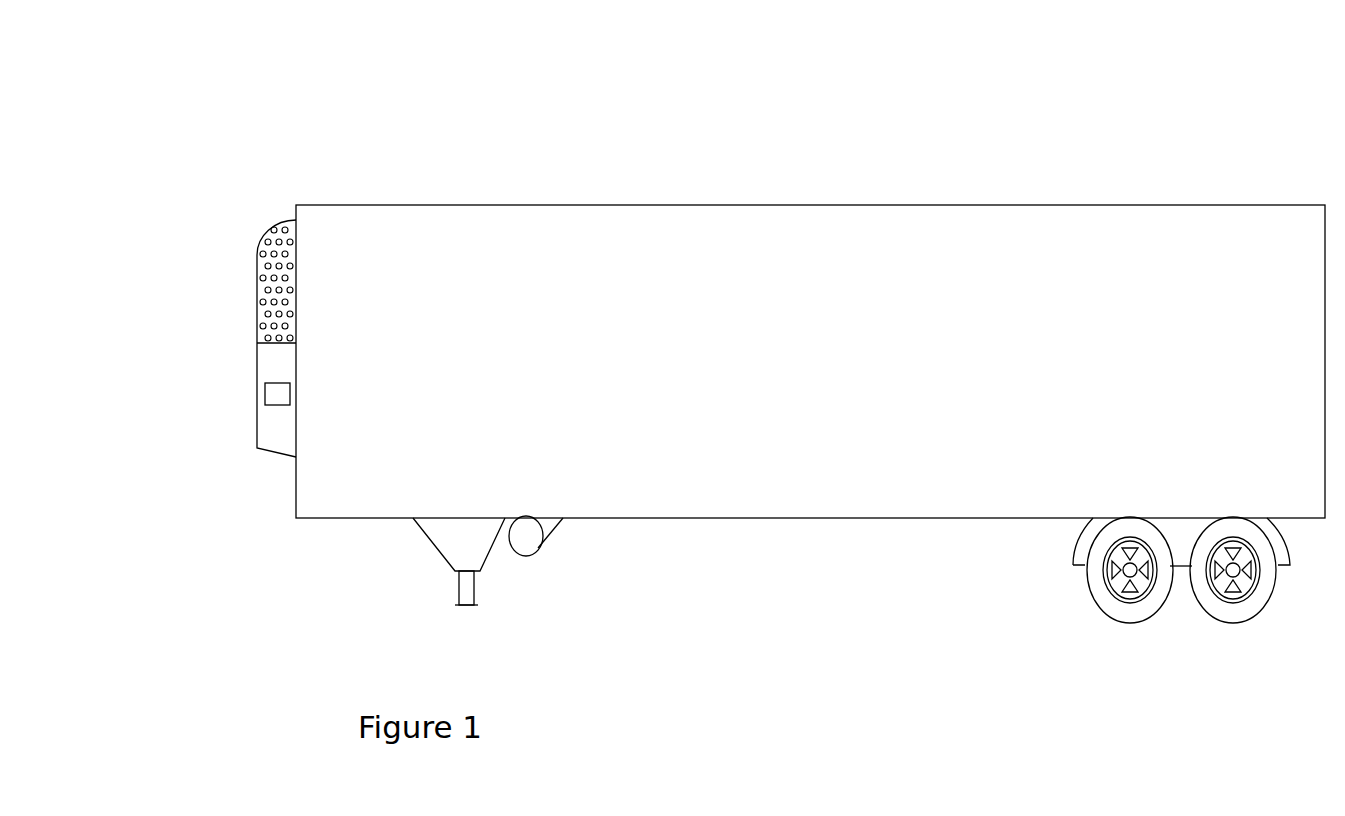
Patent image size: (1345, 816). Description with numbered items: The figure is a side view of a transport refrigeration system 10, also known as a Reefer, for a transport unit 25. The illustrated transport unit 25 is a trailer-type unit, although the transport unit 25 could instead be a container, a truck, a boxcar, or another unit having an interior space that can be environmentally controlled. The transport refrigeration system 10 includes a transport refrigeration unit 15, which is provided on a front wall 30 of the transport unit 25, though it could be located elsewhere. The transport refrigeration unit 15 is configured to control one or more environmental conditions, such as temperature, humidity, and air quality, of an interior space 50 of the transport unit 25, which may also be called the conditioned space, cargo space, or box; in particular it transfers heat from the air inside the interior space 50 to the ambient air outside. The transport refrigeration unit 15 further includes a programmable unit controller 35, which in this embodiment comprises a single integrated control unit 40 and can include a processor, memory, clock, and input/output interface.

The transport refrigeration system 10 is at (553, 110).
The transport refrigeration unit 15 is at (276, 233).
The transport unit 25 is at (810, 205).
The front wall 30 is at (296, 359).
The unit controller 35 is at (255, 359).
The single integrated control unit 40 is at (290, 393).
The interior space 50 is at (797, 500).